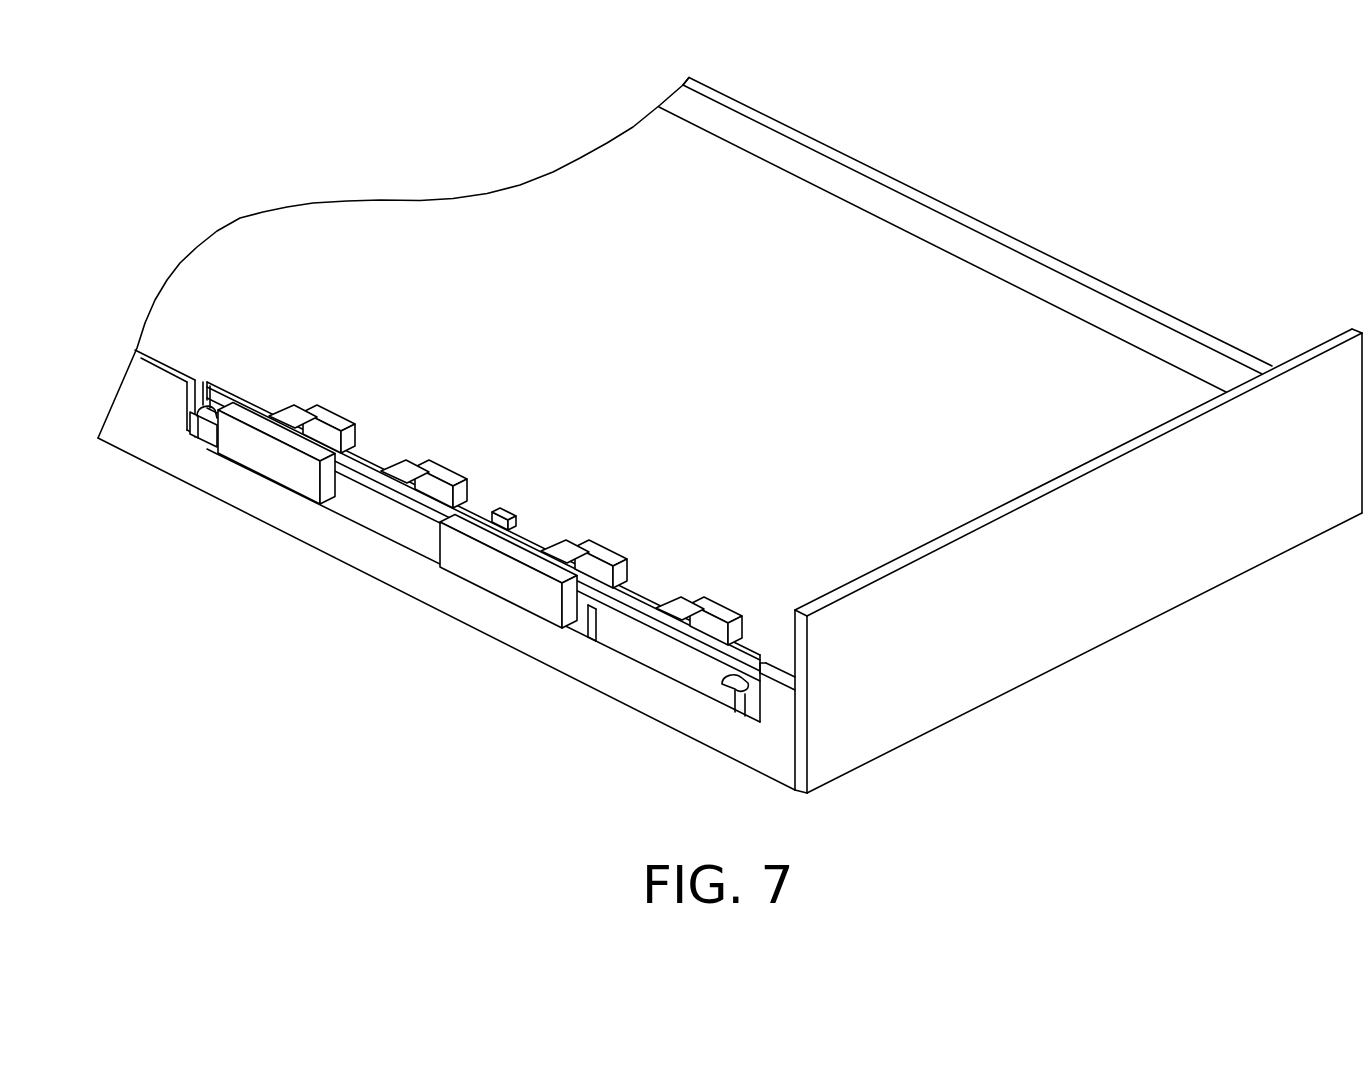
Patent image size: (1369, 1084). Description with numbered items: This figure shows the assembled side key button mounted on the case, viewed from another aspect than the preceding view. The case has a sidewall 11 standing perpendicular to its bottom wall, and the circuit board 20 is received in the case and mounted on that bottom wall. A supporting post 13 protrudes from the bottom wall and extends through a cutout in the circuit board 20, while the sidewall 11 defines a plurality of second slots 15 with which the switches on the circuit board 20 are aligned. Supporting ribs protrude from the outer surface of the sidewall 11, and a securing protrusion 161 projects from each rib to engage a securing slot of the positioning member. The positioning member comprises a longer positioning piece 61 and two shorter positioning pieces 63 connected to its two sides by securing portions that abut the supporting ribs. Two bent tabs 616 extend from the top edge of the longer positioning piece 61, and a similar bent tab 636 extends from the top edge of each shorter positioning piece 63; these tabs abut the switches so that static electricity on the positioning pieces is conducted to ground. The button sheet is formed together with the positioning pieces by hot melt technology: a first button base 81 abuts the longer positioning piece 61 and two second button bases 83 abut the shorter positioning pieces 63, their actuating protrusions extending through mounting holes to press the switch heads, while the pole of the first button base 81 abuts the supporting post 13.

The sidewall 11 is at (162, 427).
The supporting post 13 is at (492, 532).
The second slots 15 is at (588, 637).
The circuit board 20 is at (913, 290).
The longer positioning piece 61 is at (372, 468).
The shorter positioning piece 63 is at (327, 452).
The first button base 81 is at (545, 603).
The second button base 83 is at (292, 470).
The securing protrusion 161 is at (737, 693).
The bent tab 616 is at (405, 478).
The bent tab 636 is at (253, 432).